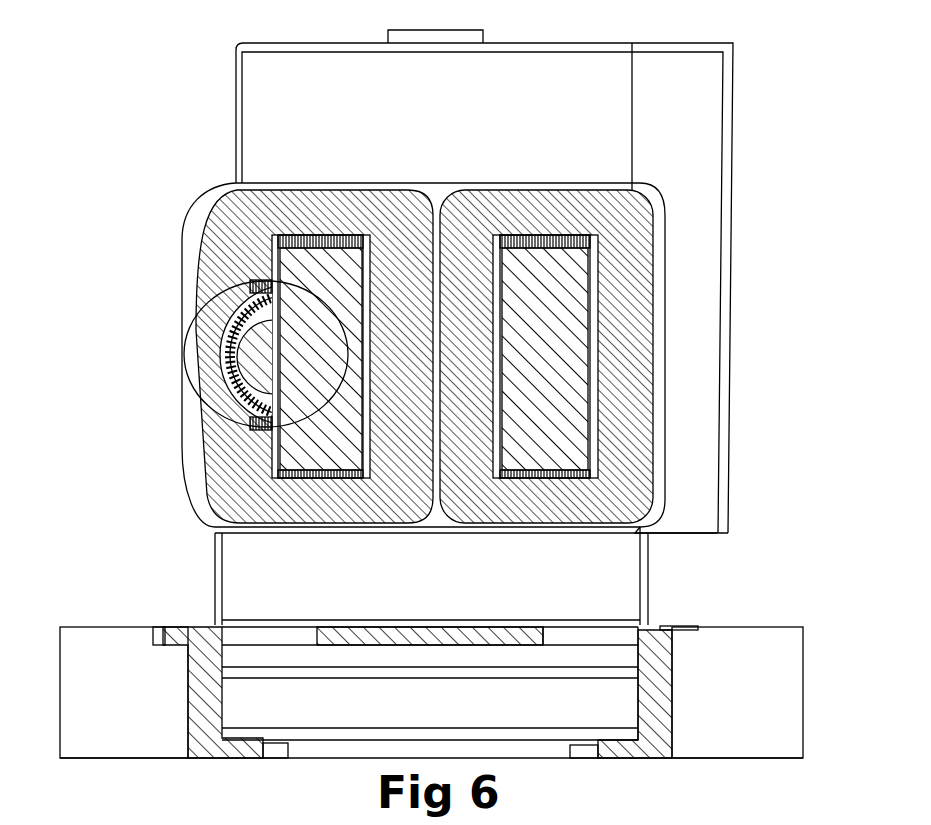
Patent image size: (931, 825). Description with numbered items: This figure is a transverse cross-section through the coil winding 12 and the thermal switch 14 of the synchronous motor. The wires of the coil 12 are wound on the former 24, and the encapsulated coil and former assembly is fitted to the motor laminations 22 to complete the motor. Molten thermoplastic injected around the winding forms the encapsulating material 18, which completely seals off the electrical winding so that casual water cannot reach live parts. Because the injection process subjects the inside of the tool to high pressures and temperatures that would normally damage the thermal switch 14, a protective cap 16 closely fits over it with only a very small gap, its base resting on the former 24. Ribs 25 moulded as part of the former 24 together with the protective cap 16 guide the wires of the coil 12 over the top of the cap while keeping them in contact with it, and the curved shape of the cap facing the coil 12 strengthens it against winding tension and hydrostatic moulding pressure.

The coil winding 12 is at (230, 460).
The thermal switch 14 is at (257, 350).
The protective cap 16 is at (223, 363).
The encapsulating material 18 is at (187, 445).
The motor laminations 22 is at (548, 295).
The former 24 is at (272, 238).
The ribs 25 is at (213, 232).